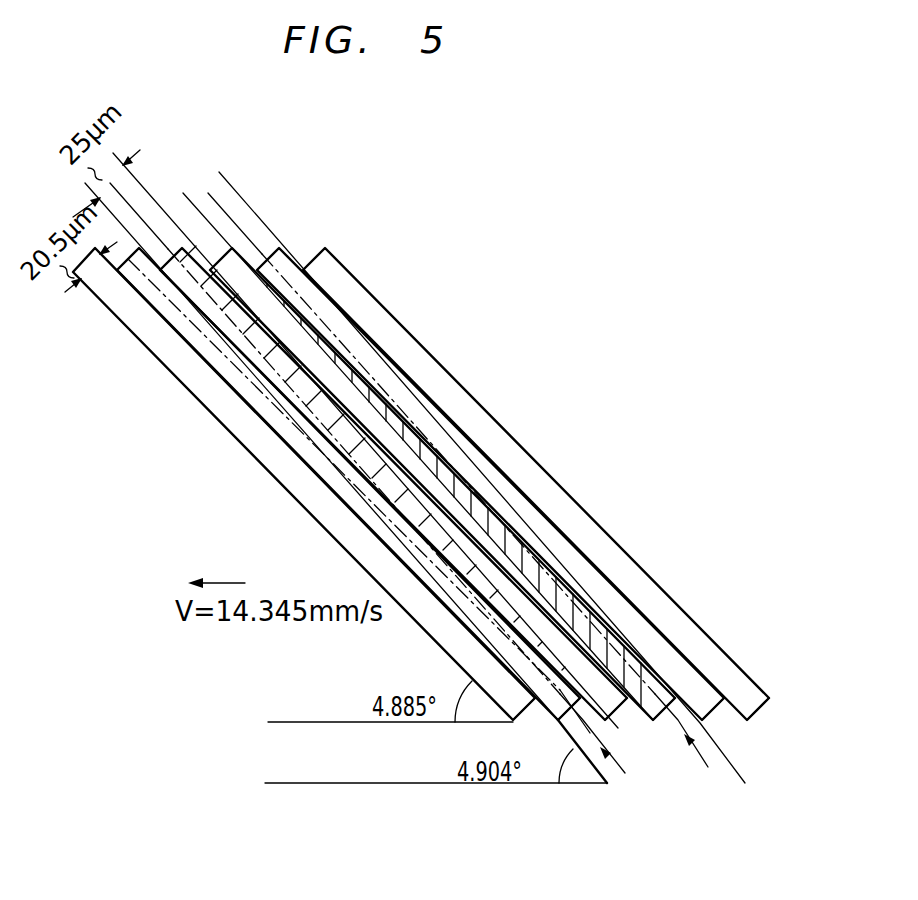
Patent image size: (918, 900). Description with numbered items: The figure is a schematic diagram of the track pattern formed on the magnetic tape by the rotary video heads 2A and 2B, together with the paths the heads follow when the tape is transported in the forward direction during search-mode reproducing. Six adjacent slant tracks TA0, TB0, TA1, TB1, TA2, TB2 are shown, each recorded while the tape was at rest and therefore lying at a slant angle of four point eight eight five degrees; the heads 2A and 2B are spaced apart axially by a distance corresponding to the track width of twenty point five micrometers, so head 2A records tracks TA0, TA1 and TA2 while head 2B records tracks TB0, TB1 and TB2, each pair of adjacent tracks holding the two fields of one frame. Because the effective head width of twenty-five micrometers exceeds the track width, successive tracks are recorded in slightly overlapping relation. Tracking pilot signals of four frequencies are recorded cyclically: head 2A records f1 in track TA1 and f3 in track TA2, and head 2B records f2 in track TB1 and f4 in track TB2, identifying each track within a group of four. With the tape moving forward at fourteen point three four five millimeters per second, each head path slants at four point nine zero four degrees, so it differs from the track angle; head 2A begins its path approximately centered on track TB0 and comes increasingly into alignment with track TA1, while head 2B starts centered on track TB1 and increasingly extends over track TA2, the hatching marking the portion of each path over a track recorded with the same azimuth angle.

The slant record track TA0 is at (240, 427).
The slant record track TB0 is at (213, 362).
The slant record track TA1 is at (617, 692).
The slant record track TB1 is at (675, 702).
The slant record track TA2 is at (520, 508).
The slant record track TB2 is at (558, 503).
The video head 2A is at (372, 477).
The video head 2B is at (465, 487).
The first tracking pilot signal frequency f1 is at (612, 702).
The second tracking pilot signal frequency f2 is at (659, 702).
The third tracking pilot signal frequency f3 is at (614, 702).
The fourth tracking pilot signal frequency f4 is at (660, 702).